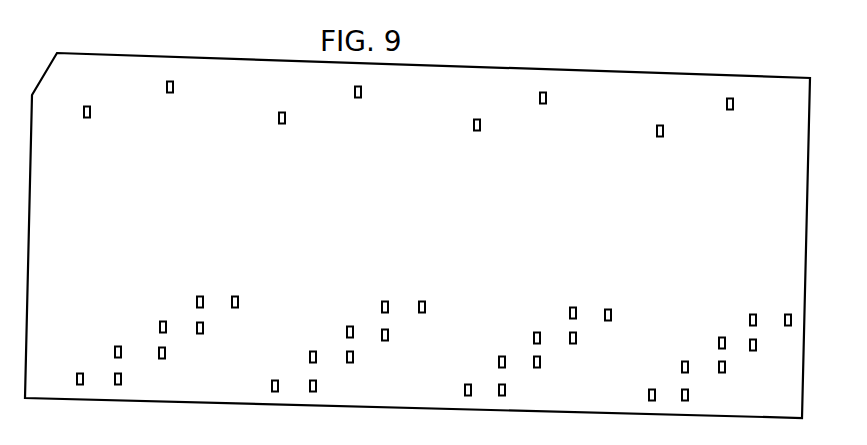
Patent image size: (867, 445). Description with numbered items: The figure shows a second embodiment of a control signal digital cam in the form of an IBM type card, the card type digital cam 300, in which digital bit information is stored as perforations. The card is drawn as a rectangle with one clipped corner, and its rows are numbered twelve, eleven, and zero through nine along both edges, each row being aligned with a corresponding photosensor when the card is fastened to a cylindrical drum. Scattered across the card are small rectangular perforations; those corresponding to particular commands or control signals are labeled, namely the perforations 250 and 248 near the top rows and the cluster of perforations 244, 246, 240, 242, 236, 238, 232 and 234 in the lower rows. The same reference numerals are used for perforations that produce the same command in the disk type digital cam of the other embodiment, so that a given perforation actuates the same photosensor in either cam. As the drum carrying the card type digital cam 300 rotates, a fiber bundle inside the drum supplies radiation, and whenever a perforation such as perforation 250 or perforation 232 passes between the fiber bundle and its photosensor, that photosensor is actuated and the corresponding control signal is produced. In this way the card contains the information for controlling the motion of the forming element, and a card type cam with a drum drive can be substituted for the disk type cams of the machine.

The card type digital cam 300 is at (464, 67).
The perforation 250 is at (175, 87).
The perforation 248 is at (92, 116).
The perforation 244 is at (200, 296).
The perforation 246 is at (236, 296).
The perforation 240 is at (160, 320).
The perforation 242 is at (204, 328).
The perforation 236 is at (118, 346).
The perforation 238 is at (166, 352).
The perforation 232 is at (80, 373).
The perforation 234 is at (122, 380).